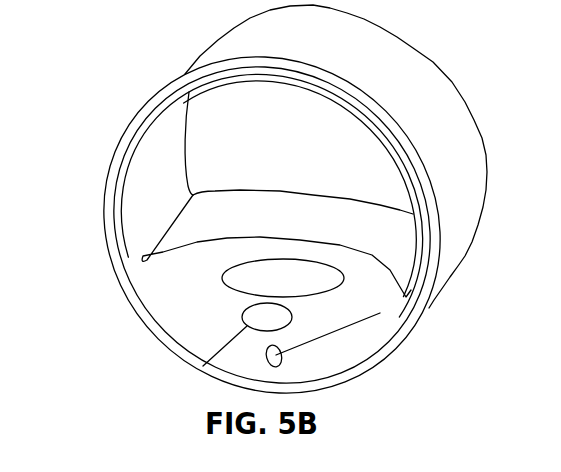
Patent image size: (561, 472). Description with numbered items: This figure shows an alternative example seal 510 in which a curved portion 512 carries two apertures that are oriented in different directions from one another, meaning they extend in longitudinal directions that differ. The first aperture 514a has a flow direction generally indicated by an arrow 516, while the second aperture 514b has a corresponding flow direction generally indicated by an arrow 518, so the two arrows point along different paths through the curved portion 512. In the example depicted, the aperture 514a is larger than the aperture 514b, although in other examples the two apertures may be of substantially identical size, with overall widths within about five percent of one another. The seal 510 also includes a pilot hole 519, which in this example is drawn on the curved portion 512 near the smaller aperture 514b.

The seal 510 is at (180, 32).
The curved portion 512 is at (262, 250).
The aperture 514a is at (226, 272).
The aperture 514b is at (292, 306).
The arrow 516 is at (198, 289).
The arrow 518 is at (194, 359).
The pilot hole 519 is at (380, 313).